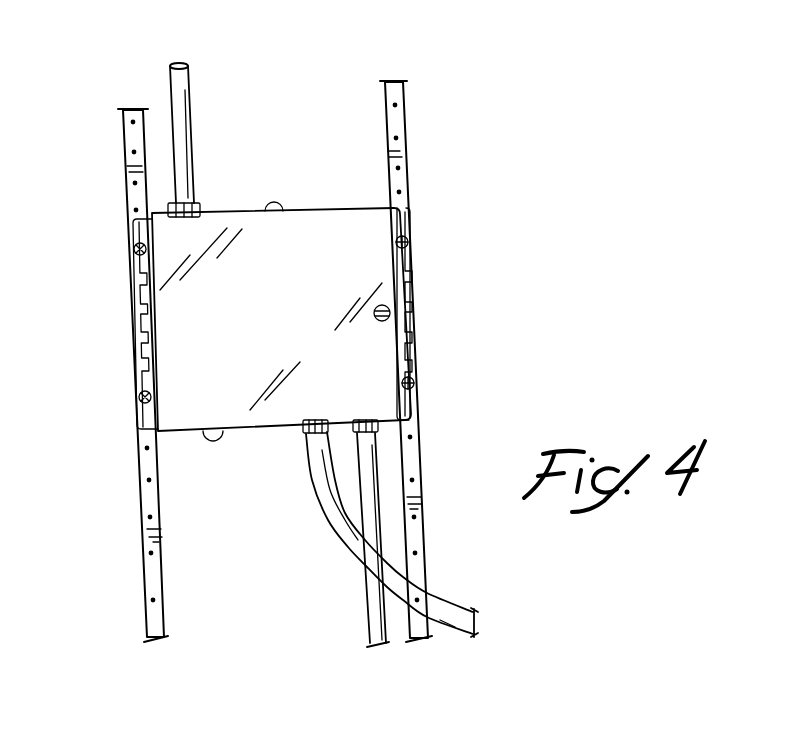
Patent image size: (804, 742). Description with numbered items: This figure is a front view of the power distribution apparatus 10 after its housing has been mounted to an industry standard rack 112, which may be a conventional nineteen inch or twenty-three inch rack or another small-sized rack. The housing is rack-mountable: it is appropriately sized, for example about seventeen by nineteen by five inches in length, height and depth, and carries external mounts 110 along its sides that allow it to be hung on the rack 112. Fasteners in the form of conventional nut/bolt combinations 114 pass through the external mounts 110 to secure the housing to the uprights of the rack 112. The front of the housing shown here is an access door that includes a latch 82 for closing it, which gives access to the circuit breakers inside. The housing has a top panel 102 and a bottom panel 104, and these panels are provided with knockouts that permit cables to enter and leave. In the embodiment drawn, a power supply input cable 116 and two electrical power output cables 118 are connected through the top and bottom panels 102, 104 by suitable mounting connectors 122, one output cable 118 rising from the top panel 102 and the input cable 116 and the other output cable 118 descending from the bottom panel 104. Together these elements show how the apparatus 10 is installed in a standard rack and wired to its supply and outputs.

The apparatus 10 is at (340, 203).
The latch 82 is at (375, 316).
The top panel 102 is at (282, 214).
The bottom panel 104 is at (222, 431).
The external mounts 110 is at (408, 291).
The industry standard rack 112 is at (416, 160).
The nut/bolt combinations 114 is at (408, 243).
The power supply input cable 116 is at (371, 596).
The electrical power output cables 118 is at (192, 100).
The mounting connectors 122 is at (203, 206).